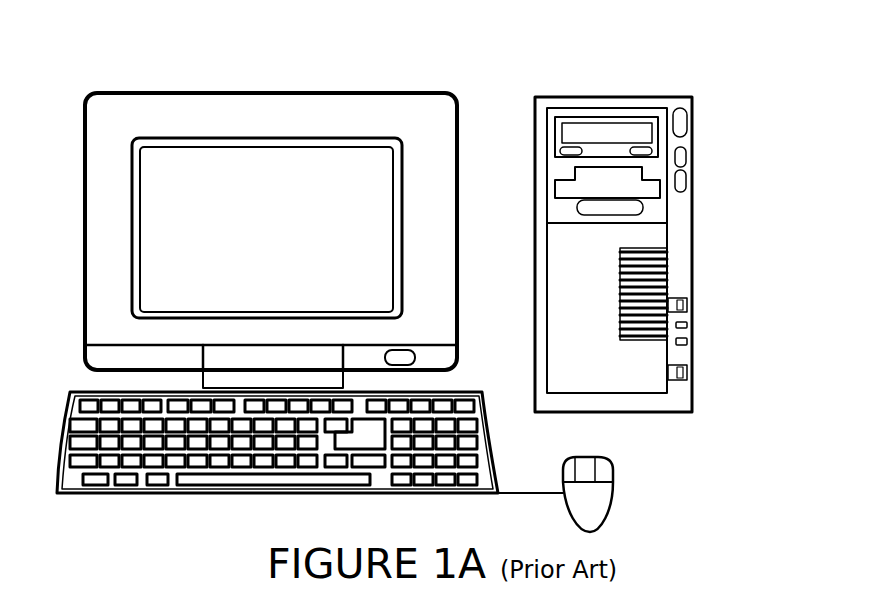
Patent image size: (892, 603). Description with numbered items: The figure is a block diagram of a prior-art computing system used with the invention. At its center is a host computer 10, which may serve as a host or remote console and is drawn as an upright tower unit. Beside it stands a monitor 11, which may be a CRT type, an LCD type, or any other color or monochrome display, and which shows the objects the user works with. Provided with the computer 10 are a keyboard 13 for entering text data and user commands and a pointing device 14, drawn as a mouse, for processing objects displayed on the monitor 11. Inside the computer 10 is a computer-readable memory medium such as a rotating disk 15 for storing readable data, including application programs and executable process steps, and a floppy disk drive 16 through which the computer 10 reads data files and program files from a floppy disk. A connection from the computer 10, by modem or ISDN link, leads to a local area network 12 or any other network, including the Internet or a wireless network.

The host computer 10 is at (671, 208).
The monitor 11 is at (143, 92).
The local area network 12 is at (687, 306).
The keyboard 13 is at (192, 496).
The pointing device 14 is at (613, 500).
The rotating disk 15 is at (640, 134).
The floppy disk drive 16 is at (640, 190).